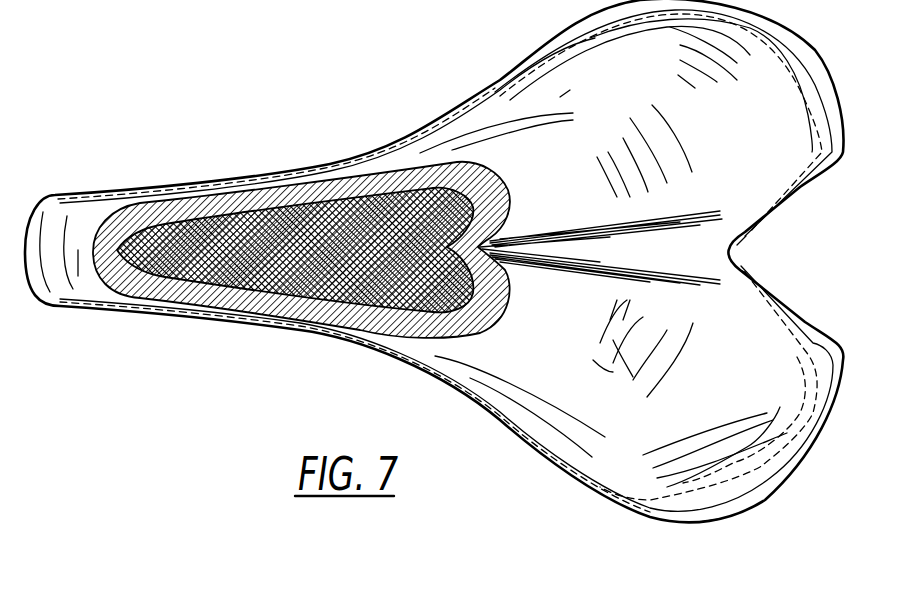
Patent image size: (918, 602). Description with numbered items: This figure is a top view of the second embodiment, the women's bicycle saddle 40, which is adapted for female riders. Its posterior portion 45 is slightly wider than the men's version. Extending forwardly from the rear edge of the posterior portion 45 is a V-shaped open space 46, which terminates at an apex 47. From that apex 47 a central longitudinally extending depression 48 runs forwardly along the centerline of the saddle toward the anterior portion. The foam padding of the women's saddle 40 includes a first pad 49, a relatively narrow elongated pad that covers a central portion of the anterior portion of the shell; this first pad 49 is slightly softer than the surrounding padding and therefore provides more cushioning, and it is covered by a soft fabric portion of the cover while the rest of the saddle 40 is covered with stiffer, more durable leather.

The women's bicycle saddle 40 is at (192, 146).
The posterior portion 45 is at (707, 463).
The V-shaped open space 46 is at (757, 252).
The apex 47 is at (733, 248).
The central longitudinally extending depression 48 is at (620, 253).
The first pad 49 is at (247, 189).